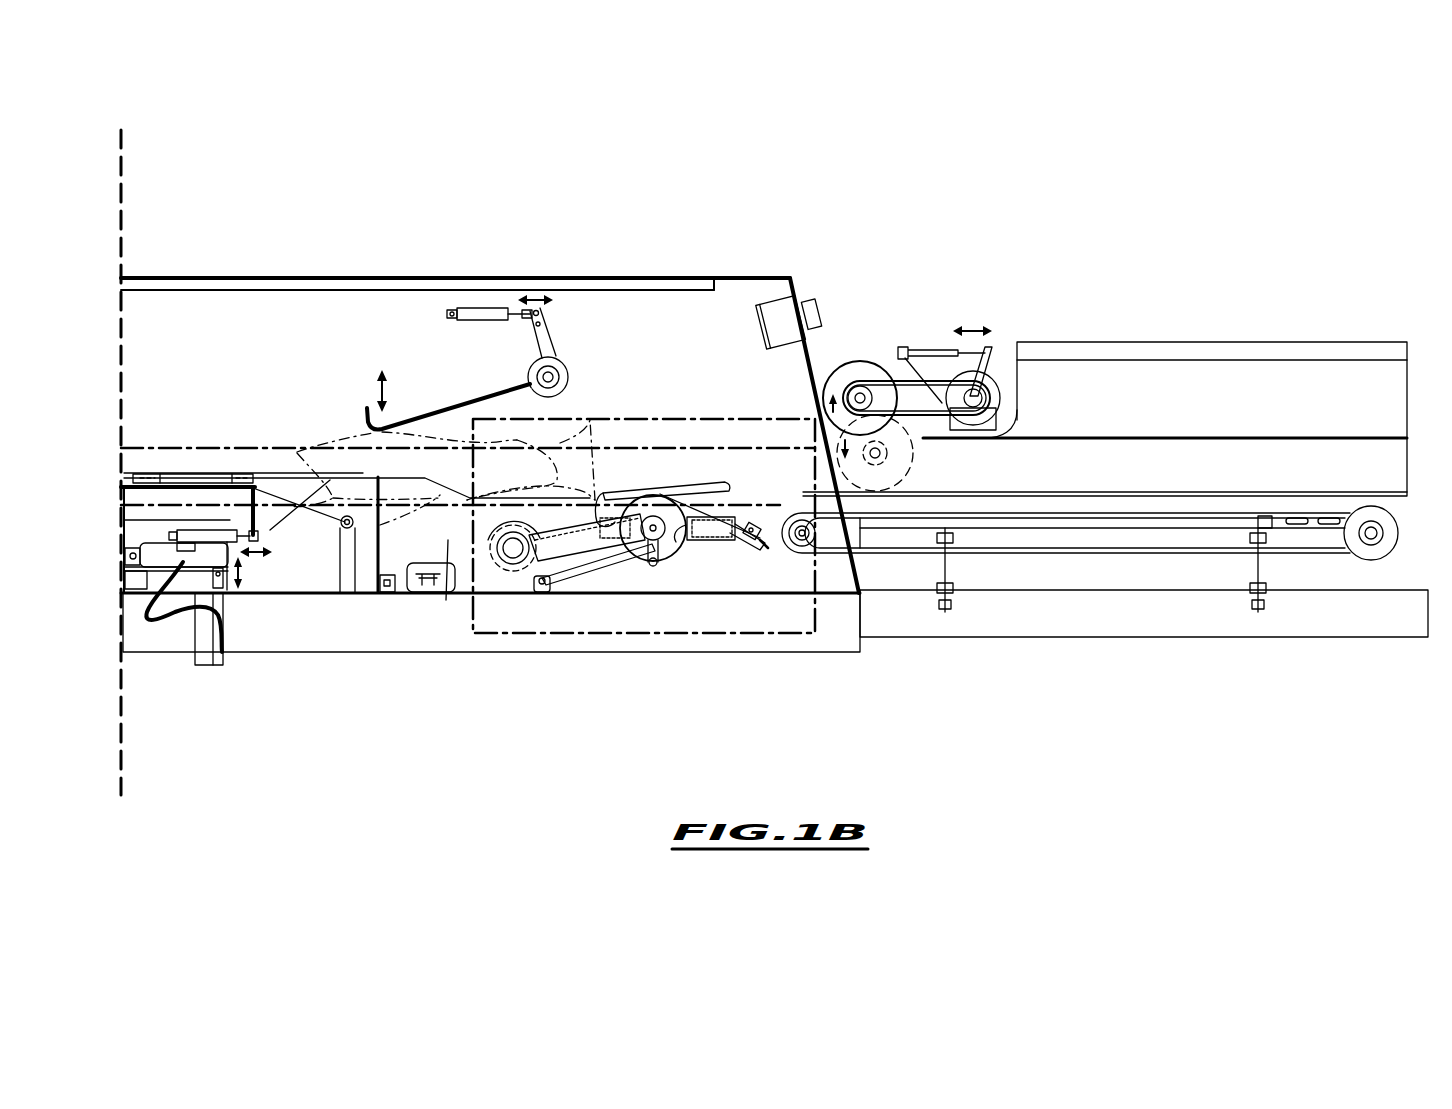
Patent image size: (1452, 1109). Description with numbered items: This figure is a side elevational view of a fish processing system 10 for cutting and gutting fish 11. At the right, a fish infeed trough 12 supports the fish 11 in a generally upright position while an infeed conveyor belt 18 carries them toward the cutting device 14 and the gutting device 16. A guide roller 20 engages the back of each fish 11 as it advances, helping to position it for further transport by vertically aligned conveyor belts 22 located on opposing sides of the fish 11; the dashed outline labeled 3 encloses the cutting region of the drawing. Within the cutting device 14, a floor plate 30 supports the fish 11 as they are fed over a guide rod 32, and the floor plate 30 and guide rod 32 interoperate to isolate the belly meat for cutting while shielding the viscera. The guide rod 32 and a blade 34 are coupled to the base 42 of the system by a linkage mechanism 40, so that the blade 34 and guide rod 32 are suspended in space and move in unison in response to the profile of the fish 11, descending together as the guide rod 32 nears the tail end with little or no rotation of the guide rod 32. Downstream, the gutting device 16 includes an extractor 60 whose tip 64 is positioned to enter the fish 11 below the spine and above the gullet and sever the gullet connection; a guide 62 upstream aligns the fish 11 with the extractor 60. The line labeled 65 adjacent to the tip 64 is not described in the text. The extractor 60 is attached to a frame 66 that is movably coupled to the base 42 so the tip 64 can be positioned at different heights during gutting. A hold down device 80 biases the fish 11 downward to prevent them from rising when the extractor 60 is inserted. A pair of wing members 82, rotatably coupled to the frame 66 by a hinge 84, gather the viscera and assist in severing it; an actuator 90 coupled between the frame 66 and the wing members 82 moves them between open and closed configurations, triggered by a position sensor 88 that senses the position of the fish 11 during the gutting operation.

The fish processing system 10 is at (840, 208).
The fish 11 is at (340, 428).
The fish infeed trough 12 is at (1131, 466).
The cutting device 14 is at (687, 642).
The gutting device 16 is at (300, 632).
The infeed conveyor belt 18 is at (1201, 513).
The guide roller 20 is at (818, 380).
The conveyor belts 22 is at (728, 445).
The reference plane 3 is at (627, 418).
The floor plate 30 is at (733, 512).
The guide rod 32 is at (701, 486).
The blade 34 is at (678, 556).
The linkage mechanism 40 is at (618, 590).
The base 42 is at (511, 566).
The extractor 60 is at (185, 476).
The guide 62 is at (446, 600).
The tip of the extractor 64 is at (362, 474).
The guide plate 65 is at (352, 479).
The frame 66 is at (131, 497).
The hold down device 80 is at (490, 386).
The wing members 82 is at (278, 513).
The hinge 84 is at (246, 516).
The position sensor 88 is at (380, 545).
The actuator 90 is at (183, 536).